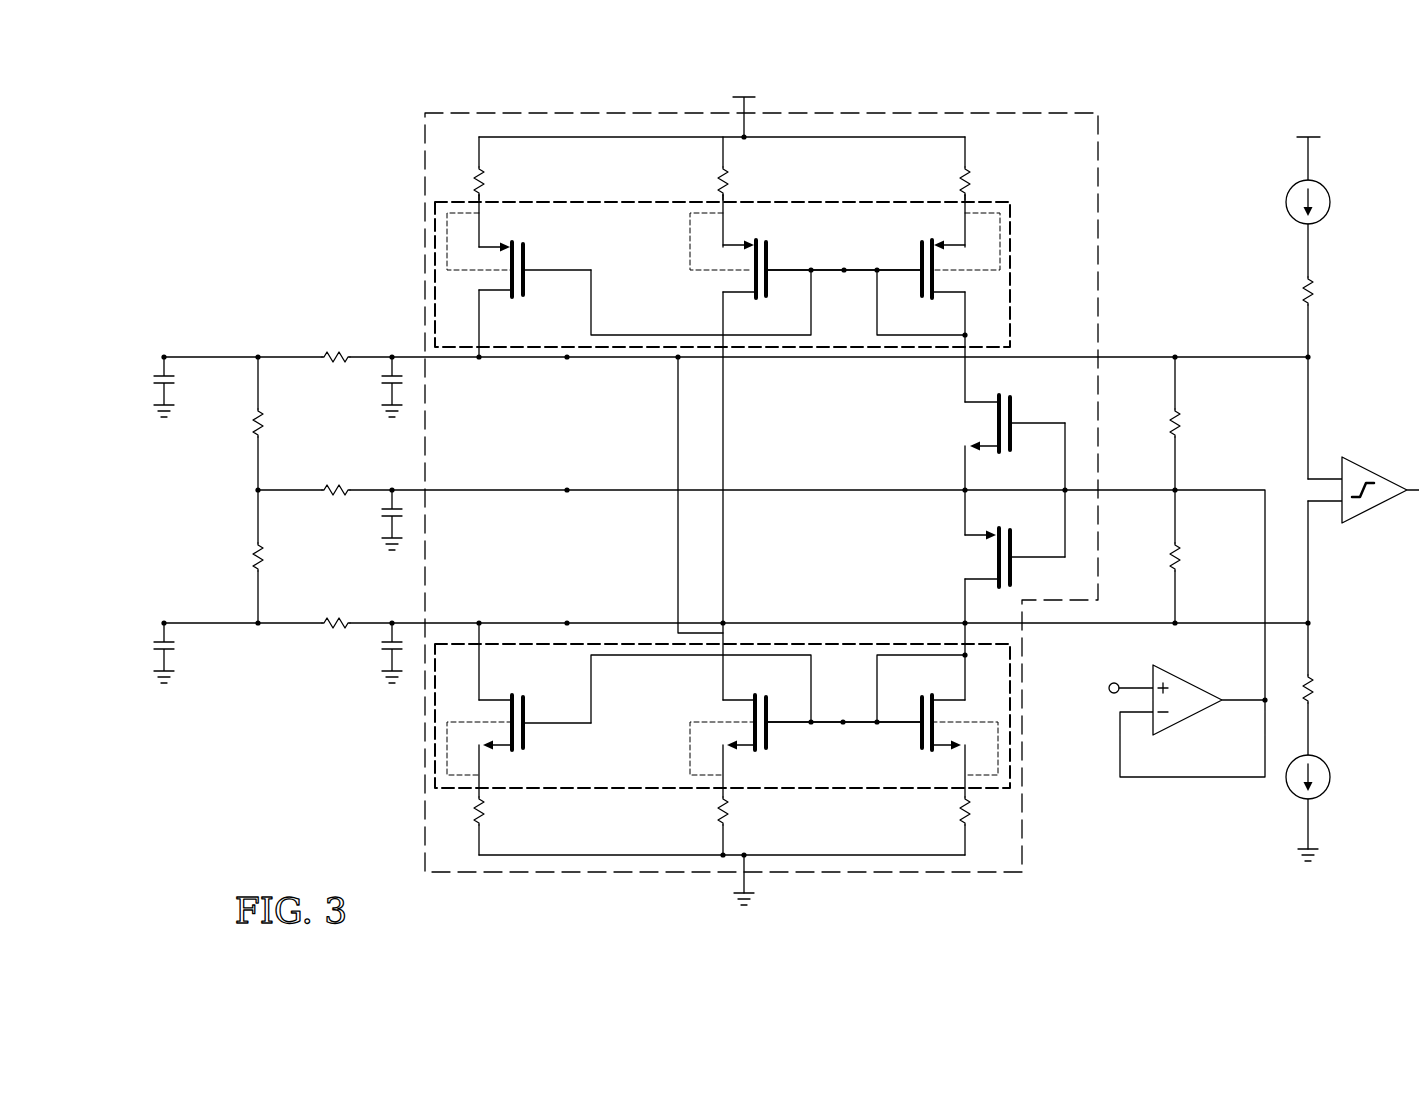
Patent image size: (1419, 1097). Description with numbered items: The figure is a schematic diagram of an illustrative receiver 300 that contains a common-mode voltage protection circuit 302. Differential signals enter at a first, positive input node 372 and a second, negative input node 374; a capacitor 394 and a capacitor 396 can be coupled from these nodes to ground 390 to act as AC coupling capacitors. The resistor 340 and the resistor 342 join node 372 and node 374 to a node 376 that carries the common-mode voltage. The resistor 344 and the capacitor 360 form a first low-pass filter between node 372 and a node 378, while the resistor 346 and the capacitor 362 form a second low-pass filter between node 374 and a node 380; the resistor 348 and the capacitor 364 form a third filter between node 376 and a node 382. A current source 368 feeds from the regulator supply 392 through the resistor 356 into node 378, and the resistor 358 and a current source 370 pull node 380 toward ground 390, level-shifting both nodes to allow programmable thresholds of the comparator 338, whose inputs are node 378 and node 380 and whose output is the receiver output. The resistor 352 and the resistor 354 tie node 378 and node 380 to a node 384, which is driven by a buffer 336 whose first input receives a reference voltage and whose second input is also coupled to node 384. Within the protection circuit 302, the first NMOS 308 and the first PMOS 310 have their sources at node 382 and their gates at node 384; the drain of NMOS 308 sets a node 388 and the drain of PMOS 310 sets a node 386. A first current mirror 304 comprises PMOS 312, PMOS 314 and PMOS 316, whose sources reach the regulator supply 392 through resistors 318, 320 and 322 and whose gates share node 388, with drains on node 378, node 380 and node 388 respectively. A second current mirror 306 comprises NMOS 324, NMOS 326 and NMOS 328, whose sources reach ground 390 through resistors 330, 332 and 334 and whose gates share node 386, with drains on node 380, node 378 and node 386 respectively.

The receiver 300 is at (749, 501).
The common-mode voltage protection circuit 302 is at (719, 495).
The first current mirror 304 is at (722, 244).
The second current mirror 306 is at (722, 673).
The first NMOS 308 is at (1013, 412).
The first PMOS 310 is at (1013, 569).
The PMOS 312 is at (527, 258).
The PMOS 314 is at (770, 259).
The PMOS 316 is at (917, 259).
The resistor 318 is at (485, 189).
The resistor 320 is at (718, 186).
The resistor 322 is at (960, 186).
The NMOS 324 is at (527, 735).
The NMOS 326 is at (770, 736).
The NMOS 328 is at (917, 736).
The resistor 330 is at (485, 808).
The resistor 332 is at (718, 806).
The resistor 334 is at (960, 808).
The buffer 336 is at (1185, 711).
The comparator 338 is at (1375, 473).
The resistor 340 is at (256, 430).
The resistor 342 is at (256, 556).
The resistor 344 is at (340, 352).
The resistor 346 is at (340, 618).
The resistor 348 is at (340, 485).
The resistor 352 is at (1184, 430).
The resistor 354 is at (1184, 557).
The resistor 356 is at (1320, 298).
The resistor 358 is at (1320, 690).
The capacitor 360 is at (380, 378).
The capacitor 362 is at (380, 644).
The capacitor 364 is at (380, 511).
The current source 368 is at (1331, 208).
The current source 370 is at (1331, 777).
The node 372 is at (164, 353).
The node 374 is at (163, 620).
The node 376 is at (256, 488).
The node 378 is at (567, 362).
The node 380 is at (568, 619).
The node 382 is at (567, 495).
The node 384 is at (1177, 487).
The node 386 is at (843, 717).
The node 388 is at (844, 275).
The ground 390 is at (163, 422).
The regulator supply 392 is at (741, 93).
The capacitor 394 is at (154, 376).
The capacitor 396 is at (154, 642).